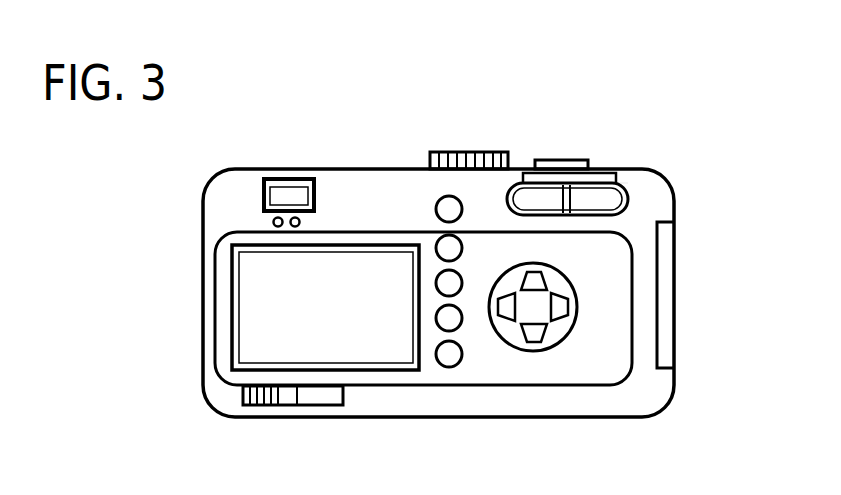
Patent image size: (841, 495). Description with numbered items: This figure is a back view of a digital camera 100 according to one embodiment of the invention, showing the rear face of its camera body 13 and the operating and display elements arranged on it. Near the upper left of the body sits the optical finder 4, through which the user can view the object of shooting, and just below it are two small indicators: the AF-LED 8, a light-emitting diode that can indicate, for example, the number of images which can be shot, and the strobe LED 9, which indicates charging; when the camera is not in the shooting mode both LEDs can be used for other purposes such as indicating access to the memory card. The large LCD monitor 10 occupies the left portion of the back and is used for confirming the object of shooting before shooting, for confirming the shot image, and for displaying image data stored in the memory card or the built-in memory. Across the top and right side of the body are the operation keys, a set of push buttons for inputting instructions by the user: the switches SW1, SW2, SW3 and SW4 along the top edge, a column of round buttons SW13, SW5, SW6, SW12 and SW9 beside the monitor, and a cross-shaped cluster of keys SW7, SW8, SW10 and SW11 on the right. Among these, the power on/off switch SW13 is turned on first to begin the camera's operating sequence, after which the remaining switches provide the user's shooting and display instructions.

The digital camera 100 is at (655, 162).
The optical finder 4 is at (292, 178).
The AF-LED 8 is at (273, 223).
The strobe LED 9 is at (300, 223).
The LCD monitor 10 is at (232, 301).
The camera body 13 is at (268, 417).
The switch SW1 is at (565, 160).
The switch SW2 is at (440, 152).
The switch SW3 is at (520, 183).
The switch SW4 is at (610, 182).
The switch SW5 is at (462, 249).
The switch SW6 is at (436, 283).
The switch SW7 is at (548, 278).
The switch SW8 is at (572, 328).
The switch SW9 is at (436, 354).
The switch SW10 is at (545, 342).
The switch SW11 is at (518, 340).
The switch SW12 is at (436, 318).
The power on/off switch SW13 is at (436, 204).